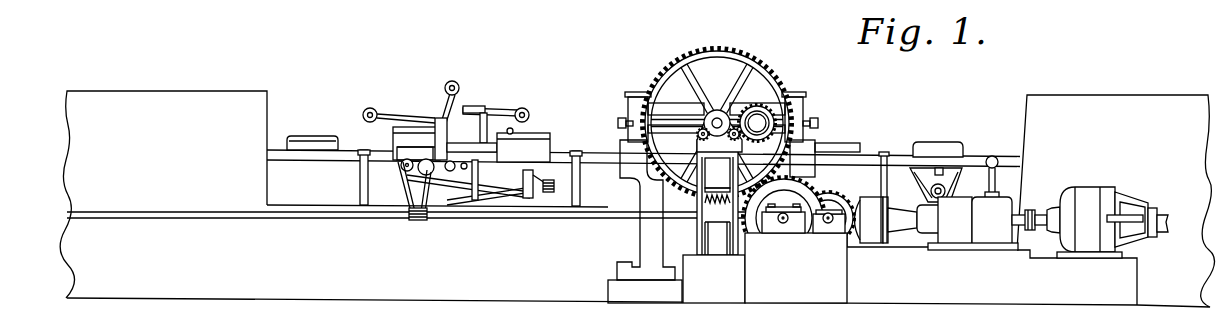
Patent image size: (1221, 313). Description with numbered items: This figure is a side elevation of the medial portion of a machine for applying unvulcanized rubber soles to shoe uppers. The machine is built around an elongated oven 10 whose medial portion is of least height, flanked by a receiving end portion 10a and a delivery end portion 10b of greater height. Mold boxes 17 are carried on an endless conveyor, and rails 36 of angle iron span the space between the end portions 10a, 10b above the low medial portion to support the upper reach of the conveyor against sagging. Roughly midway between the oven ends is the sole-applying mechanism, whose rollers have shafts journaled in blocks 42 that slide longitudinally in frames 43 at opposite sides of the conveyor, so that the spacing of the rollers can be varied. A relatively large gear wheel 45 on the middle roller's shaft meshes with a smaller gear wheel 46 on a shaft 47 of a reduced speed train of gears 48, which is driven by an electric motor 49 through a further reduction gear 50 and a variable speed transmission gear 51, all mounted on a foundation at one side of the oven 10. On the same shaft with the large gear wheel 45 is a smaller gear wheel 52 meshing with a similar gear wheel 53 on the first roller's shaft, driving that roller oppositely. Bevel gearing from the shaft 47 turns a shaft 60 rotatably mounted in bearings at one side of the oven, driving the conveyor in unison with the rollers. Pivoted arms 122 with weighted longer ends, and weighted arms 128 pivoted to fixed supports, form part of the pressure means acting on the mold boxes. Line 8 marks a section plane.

The section line 8 is at (938, 272).
The oven 10 is at (602, 227).
The receiving end portion 10a is at (172, 97).
The delivery end portion 10b is at (1127, 102).
The mold box 17 is at (310, 150).
The rails 36 is at (602, 162).
The blocks 42 is at (670, 107).
The frames 43 is at (803, 108).
The large gear wheel 45 is at (762, 58).
The smaller gear wheel 46 is at (808, 190).
The shaft 47 is at (783, 226).
The reduced speed train of gears 48 is at (838, 198).
The electric motor 49 is at (1092, 188).
The reduction gear 50 is at (927, 228).
The variable speed transmission gear 51 is at (993, 237).
The smaller gear wheel 52 is at (702, 146).
The similar gear wheel 53 is at (757, 135).
The shaft 60 is at (568, 214).
The arm 122 is at (500, 103).
The arms 128 is at (393, 114).